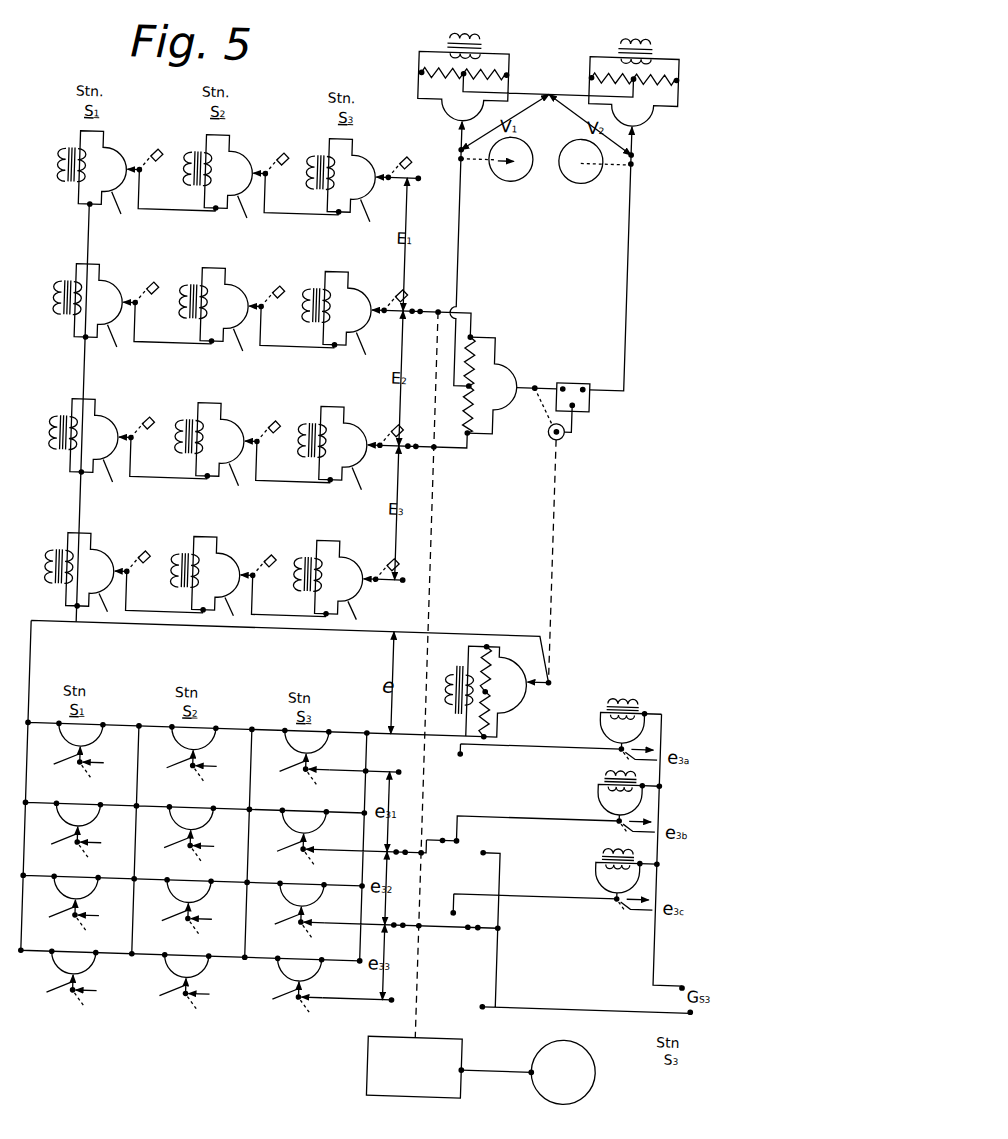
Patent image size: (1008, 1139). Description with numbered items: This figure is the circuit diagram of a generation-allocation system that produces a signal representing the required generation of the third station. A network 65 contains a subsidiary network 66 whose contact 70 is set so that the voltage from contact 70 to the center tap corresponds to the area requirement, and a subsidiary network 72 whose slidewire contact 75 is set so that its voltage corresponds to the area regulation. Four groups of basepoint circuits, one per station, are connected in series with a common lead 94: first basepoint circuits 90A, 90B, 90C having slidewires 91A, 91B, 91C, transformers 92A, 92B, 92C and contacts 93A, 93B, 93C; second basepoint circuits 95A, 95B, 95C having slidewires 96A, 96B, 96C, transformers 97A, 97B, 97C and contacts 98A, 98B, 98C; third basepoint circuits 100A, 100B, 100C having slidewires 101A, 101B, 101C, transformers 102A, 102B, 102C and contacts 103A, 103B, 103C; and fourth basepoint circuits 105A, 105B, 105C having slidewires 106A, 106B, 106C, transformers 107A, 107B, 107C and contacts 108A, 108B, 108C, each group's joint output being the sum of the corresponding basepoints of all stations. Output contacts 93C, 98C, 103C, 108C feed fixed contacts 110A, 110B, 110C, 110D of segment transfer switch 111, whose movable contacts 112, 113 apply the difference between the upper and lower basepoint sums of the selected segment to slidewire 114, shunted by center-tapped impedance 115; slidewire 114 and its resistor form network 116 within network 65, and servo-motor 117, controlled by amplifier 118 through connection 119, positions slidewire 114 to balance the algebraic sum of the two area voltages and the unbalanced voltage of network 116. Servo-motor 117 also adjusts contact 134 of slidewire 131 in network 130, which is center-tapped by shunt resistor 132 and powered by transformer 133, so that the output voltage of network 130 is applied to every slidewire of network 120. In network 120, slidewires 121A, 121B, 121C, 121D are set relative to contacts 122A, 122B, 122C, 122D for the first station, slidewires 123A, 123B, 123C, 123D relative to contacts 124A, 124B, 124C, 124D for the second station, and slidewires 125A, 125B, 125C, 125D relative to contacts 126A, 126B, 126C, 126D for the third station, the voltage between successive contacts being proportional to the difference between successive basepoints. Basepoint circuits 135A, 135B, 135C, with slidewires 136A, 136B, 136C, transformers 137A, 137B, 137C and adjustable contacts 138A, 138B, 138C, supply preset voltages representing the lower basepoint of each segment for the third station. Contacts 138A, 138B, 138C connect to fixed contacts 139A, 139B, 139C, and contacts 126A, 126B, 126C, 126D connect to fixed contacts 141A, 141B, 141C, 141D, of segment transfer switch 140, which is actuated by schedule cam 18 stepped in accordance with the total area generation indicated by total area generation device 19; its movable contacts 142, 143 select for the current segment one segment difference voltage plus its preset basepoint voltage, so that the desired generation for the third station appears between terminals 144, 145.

The schedule cam 18 is at (466, 1055).
The total area generator 19 is at (605, 1084).
The network 65 is at (535, 237).
The subsidiary network 66 is at (525, 98).
The contact 70 is at (445, 149).
The subsidiary network 72 is at (633, 102).
The slidewire contact 75 is at (620, 151).
The first basepoint circuit 90A is at (102, 169).
The first basepoint circuit 90B is at (228, 173).
The first basepoint circuit 90C is at (351, 177).
The slidewire 91A is at (123, 210).
The slidewire 91B is at (248, 214).
The slidewire 91C is at (366, 217).
The transformer 92A is at (58, 158).
The transformer 92B is at (184, 158).
The transformer 92C is at (307, 158).
The slidewire contact 93A is at (126, 176).
The slidewire contact 93B is at (252, 176).
The slidewire contact 93C is at (375, 182).
The lead 94 is at (77, 228).
The second basepoint circuit 95A is at (98, 302).
The second basepoint circuit 95B is at (224, 306).
The second basepoint circuit 95C is at (347, 309).
The slidewire 96A is at (118, 343).
The slidewire 96B is at (244, 347).
The slidewire 96C is at (362, 350).
The transformer 97A is at (58, 291).
The transformer 97B is at (184, 291).
The transformer 97C is at (307, 291).
The contact 98A is at (126, 309).
The contact 98B is at (252, 309).
The contact 98C is at (375, 315).
The third basepoint circuit 100A is at (94, 437).
The third basepoint circuit 100B is at (220, 441).
The third basepoint circuit 100C is at (343, 444).
The slidewire 101A is at (117, 477).
The slidewire 101B is at (243, 481).
The slidewire 101C is at (359, 485).
The transformer 102A is at (58, 426).
The transformer 102B is at (184, 426).
The transformer 102C is at (307, 426).
The contact 103A is at (126, 444).
The contact 103B is at (252, 444).
The contact 103C is at (375, 450).
The fourth basepoint circuit 105A is at (90, 571).
The fourth basepoint circuit 105B is at (216, 574).
The fourth basepoint circuit 105C is at (338, 578).
The slidewire 106A is at (111, 609).
The slidewire 106B is at (237, 613).
The slidewire 106C is at (353, 617).
The transformer 107A is at (58, 560).
The transformer 107B is at (184, 560).
The transformer 107C is at (307, 560).
The contact 108A is at (126, 578).
The contact 108B is at (252, 578).
The contact 108C is at (375, 584).
The fixed contact 110A is at (398, 186).
The fixed contact 110B is at (403, 306).
The fixed contact 110C is at (404, 443).
The fixed contact 110D is at (404, 578).
The segment transfer switch 111 is at (467, 495).
The movable contact 112 is at (429, 309).
The movable contact 113 is at (428, 448).
The slidewire 114 is at (490, 348).
The center-tapped impedance 115 is at (472, 433).
The network 116 is at (492, 385).
The servo-motor 117 is at (558, 433).
The amplifier 118 is at (578, 377).
The conductor 119 is at (522, 390).
The network 120 is at (242, 670).
The slidewire 121A is at (104, 746).
The slidewire 121B is at (104, 826).
The slidewire 121C is at (104, 899).
The slidewire 121D is at (104, 974).
The contact 122A is at (64, 768).
The contact 122B is at (62, 848).
The contact 122C is at (59, 921).
The contact 122D is at (56, 996).
The slidewire 123A is at (217, 746).
The slidewire 123B is at (217, 826).
The slidewire 123C is at (217, 899).
The slidewire 123D is at (217, 974).
The contact 124A is at (177, 772).
The contact 124B is at (175, 852).
The contact 124C is at (172, 925).
The contact 124D is at (169, 1000).
The slidewire 125A is at (295, 743).
The slidewire 125B is at (295, 823).
The slidewire 125C is at (295, 896).
The slidewire 125D is at (331, 975).
The contact 126A is at (291, 774).
The contact 126B is at (289, 854).
The contact 126C is at (286, 927).
The contact 126D is at (284, 1007).
The network 130 is at (508, 692).
The slidewire 131 is at (493, 662).
The resistor 132 is at (493, 712).
The transformer 133 is at (459, 667).
The contact 134 is at (532, 684).
The basepoint circuit 135A is at (623, 736).
The basepoint circuit 135B is at (621, 808).
The basepoint circuit 135C is at (618, 885).
The slidewire 136A is at (606, 721).
The slidewire 136B is at (606, 793).
The slidewire 136C is at (606, 871).
The transformer 137A is at (643, 700).
The transformer 137B is at (610, 773).
The transformer 137C is at (610, 851).
The adjustable contact 138A is at (632, 741).
The adjustable contact 138B is at (632, 813).
The adjustable contact 138C is at (632, 891).
The fixed contact 139A is at (468, 754).
The fixed contact 139B is at (467, 839).
The fixed contact 139C is at (465, 913).
The segment transfer switch 140 is at (586, 933).
The fixed contact 141A is at (404, 771).
The fixed contact 141B is at (403, 851).
The fixed contact 141C is at (403, 924).
The fixed contact 141D is at (403, 1002).
The movable contact 142 is at (442, 836).
The movable contact 143 is at (446, 924).
The terminal 144 is at (693, 977).
The terminal 145 is at (701, 1005).